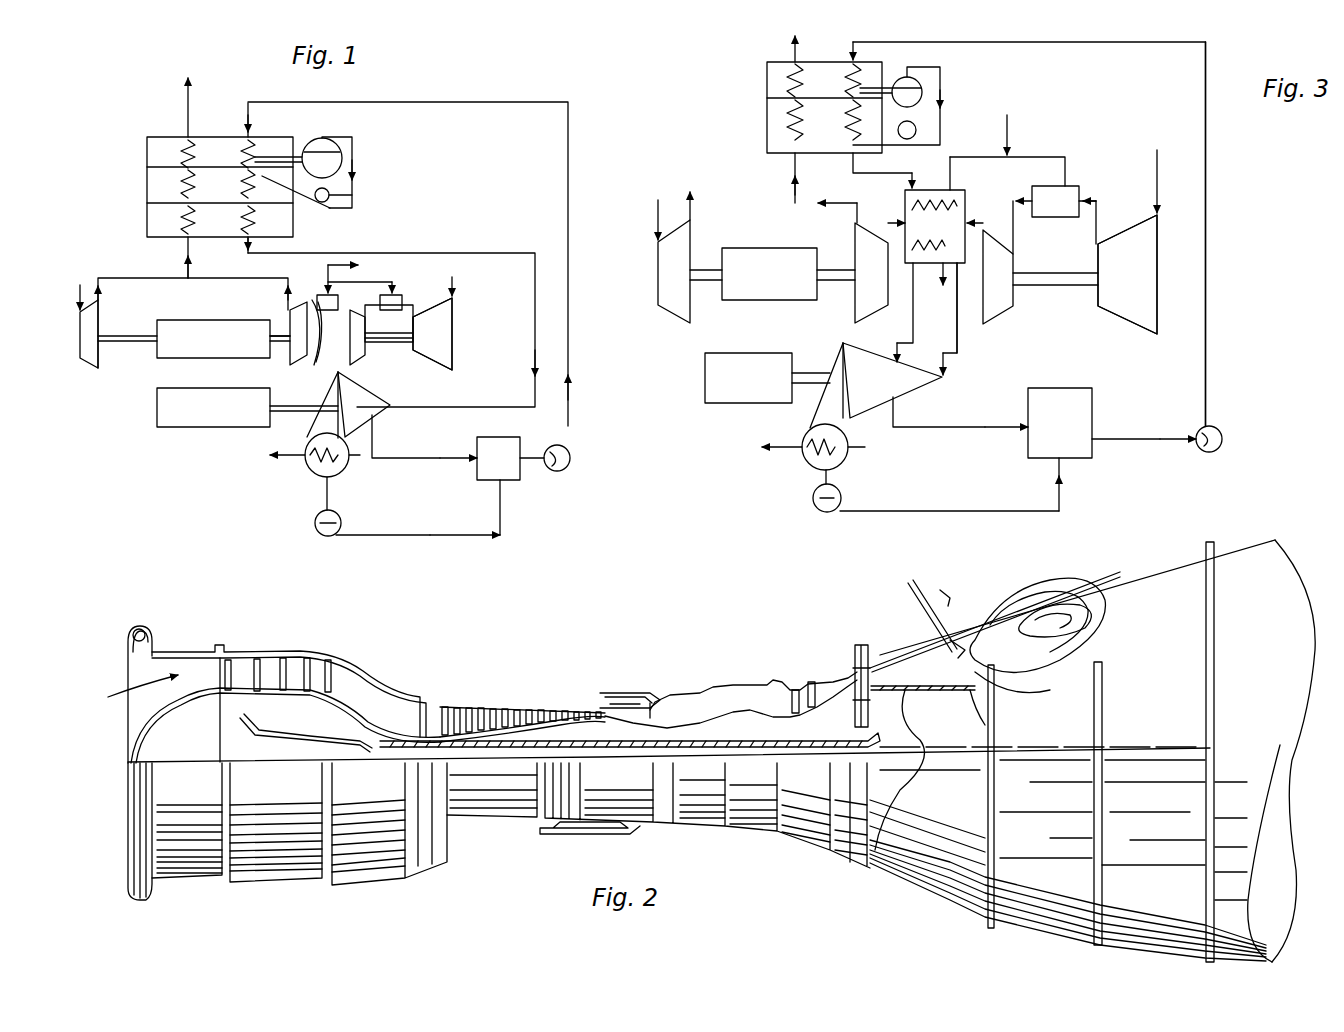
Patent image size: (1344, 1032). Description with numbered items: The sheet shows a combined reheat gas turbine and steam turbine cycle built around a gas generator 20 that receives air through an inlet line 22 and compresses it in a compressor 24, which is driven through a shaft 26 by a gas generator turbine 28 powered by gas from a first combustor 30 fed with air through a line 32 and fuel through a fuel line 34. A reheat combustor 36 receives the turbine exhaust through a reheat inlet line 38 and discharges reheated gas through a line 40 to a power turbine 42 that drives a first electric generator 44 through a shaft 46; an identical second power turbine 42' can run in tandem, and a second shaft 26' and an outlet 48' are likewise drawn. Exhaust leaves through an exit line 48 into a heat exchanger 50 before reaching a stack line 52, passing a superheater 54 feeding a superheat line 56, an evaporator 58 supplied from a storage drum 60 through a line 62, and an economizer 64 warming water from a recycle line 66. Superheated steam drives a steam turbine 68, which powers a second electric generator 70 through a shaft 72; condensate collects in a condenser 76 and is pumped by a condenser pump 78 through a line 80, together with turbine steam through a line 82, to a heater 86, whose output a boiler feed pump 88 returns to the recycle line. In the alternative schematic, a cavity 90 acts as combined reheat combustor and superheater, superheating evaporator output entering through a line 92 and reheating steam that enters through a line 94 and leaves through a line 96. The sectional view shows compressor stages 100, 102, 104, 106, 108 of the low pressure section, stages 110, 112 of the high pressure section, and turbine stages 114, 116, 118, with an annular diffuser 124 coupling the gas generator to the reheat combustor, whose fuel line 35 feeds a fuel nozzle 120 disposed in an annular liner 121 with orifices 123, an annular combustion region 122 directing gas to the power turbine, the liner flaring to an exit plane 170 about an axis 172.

In FIG. 1, the gas generator 20 is at (432, 372).
In FIG. 3, the gas generator 20 is at (1073, 302).
In FIG. 2, the gas generator 20 is at (483, 832).
In FIG. 1, the inlet line 22 is at (455, 279).
In FIG. 3, the inlet line 22 is at (1160, 162).
In FIG. 1, the compressor 24 is at (445, 327).
In FIG. 3, the compressor 24 is at (1122, 252).
In FIG. 2, the compressor 24 is at (410, 677).
In FIG. 1, the shaft 26 is at (397, 360).
In FIG. 3, the shaft 26 is at (1055, 263).
In FIG. 2, the shaft 26 is at (630, 731).
In FIG. 1, the shaft 26' is at (127, 321).
In FIG. 3, the shaft 26' is at (713, 300).
In FIG. 1, the gas generator turbine 28 is at (358, 352).
In FIG. 3, the gas generator turbine 28 is at (995, 272).
In FIG. 2, the gas generator turbine 28 is at (800, 852).
In FIG. 1, the first combustor 30 is at (388, 302).
In FIG. 3, the first combustor 30 is at (1060, 198).
In FIG. 2, the first combustor 30 is at (698, 700).
In FIG. 1, the line 32 is at (398, 312).
In FIG. 1, the fuel line 34 is at (372, 278).
In FIG. 3, the fuel line 34 is at (1020, 155).
In FIG. 2, the fuel line 34 is at (620, 693).
In FIG. 1, the fuel line 35 is at (326, 278).
In FIG. 2, the fuel line 35 is at (935, 585).
In FIG. 1, the reheat combustor 36 is at (334, 332).
In FIG. 2, the reheat combustor 36 is at (957, 914).
In FIG. 1, the reheat inlet line 38 is at (343, 287).
In FIG. 3, the reheat inlet line 38 is at (978, 220).
In FIG. 1, the line 40 is at (322, 352).
In FIG. 3, the line 40 is at (888, 226).
In FIG. 1, the power turbine 42 is at (273, 344).
In FIG. 3, the power turbine 42 is at (851, 276).
In FIG. 2, the power turbine 42 is at (1092, 736).
In FIG. 1, the second power turbine 42' is at (76, 341).
In FIG. 3, the second power turbine 42' is at (659, 275).
In FIG. 1, the first electric generator 44 is at (190, 340).
In FIG. 3, the first electric generator 44 is at (745, 262).
In FIG. 1, the shaft 46 is at (280, 332).
In FIG. 3, the shaft 46 is at (832, 266).
In FIG. 1, the exit line 48 is at (193, 323).
In FIG. 3, the exit line 48 is at (806, 188).
In FIG. 1, the air outlet 48' is at (165, 257).
In FIG. 3, the air outlet 48' is at (662, 184).
In FIG. 1, the heat exchanger 50 is at (135, 205).
In FIG. 1, the stack line 52 is at (192, 108).
In FIG. 3, the stack line 52 is at (790, 52).
In FIG. 1, the superheater 54 is at (165, 225).
In FIG. 1, the superheat line 56 is at (470, 253).
In FIG. 3, the superheat line 56 is at (962, 325).
In FIG. 1, the evaporator 58 is at (168, 180).
In FIG. 3, the evaporator 58 is at (768, 115).
In FIG. 1, the storage drum 60 is at (340, 156).
In FIG. 1, the line 62 is at (305, 178).
In FIG. 1, the economizer 64 is at (170, 150).
In FIG. 3, the economizer 64 is at (768, 77).
In FIG. 1, the recycle line 66 is at (442, 102).
In FIG. 3, the recycle line 66 is at (996, 45).
In FIG. 1, the steam turbine 68 is at (365, 412).
In FIG. 3, the steam turbine 68 is at (896, 386).
In FIG. 1, the second electric generator 70 is at (190, 405).
In FIG. 3, the second electric generator 70 is at (742, 375).
In FIG. 1, the shaft 72 is at (300, 412).
In FIG. 3, the shaft 72 is at (815, 374).
In FIG. 1, the condenser 76 is at (315, 470).
In FIG. 3, the condenser 76 is at (852, 438).
In FIG. 1, the condenser pump 78 is at (340, 523).
In FIG. 3, the condenser pump 78 is at (842, 496).
In FIG. 1, the line 80 is at (485, 537).
In FIG. 1, the line 82 is at (410, 468).
In FIG. 1, the heater 86 is at (505, 470).
In FIG. 3, the heater 86 is at (1068, 398).
In FIG. 1, the boiler feed pump 88 is at (570, 463).
In FIG. 3, the boiler feed pump 88 is at (1218, 436).
In FIG. 3, the cavity 90 is at (905, 216).
In FIG. 3, the line 92 is at (890, 178).
In FIG. 3, the line 94 is at (913, 320).
In FIG. 3, the line 96 is at (920, 322).
In FIG. 2, the stage 100 is at (229, 660).
In FIG. 2, the stage 102 is at (258, 664).
In FIG. 2, the stage 104 is at (284, 660).
In FIG. 2, the stage 106 is at (309, 660).
In FIG. 2, the stage 108 is at (331, 665).
In FIG. 2, the stage 110 is at (450, 707).
In FIG. 2, the stage 112 is at (472, 722).
In FIG. 2, the stage 114 is at (795, 690).
In FIG. 2, the stage 116 is at (811, 682).
In FIG. 2, the stage 118 is at (866, 650).
In FIG. 2, the fuel nozzle 120 is at (985, 640).
In FIG. 2, the annular liner 121 is at (965, 690).
In FIG. 2, the annular combustion region 122 is at (1075, 600).
In FIG. 2, the orifices 123 is at (1030, 675).
In FIG. 2, the annular diffuser 124 is at (920, 640).
In FIG. 2, the exit plane 170 is at (1120, 620).
In FIG. 2, the axis 172 is at (975, 758).